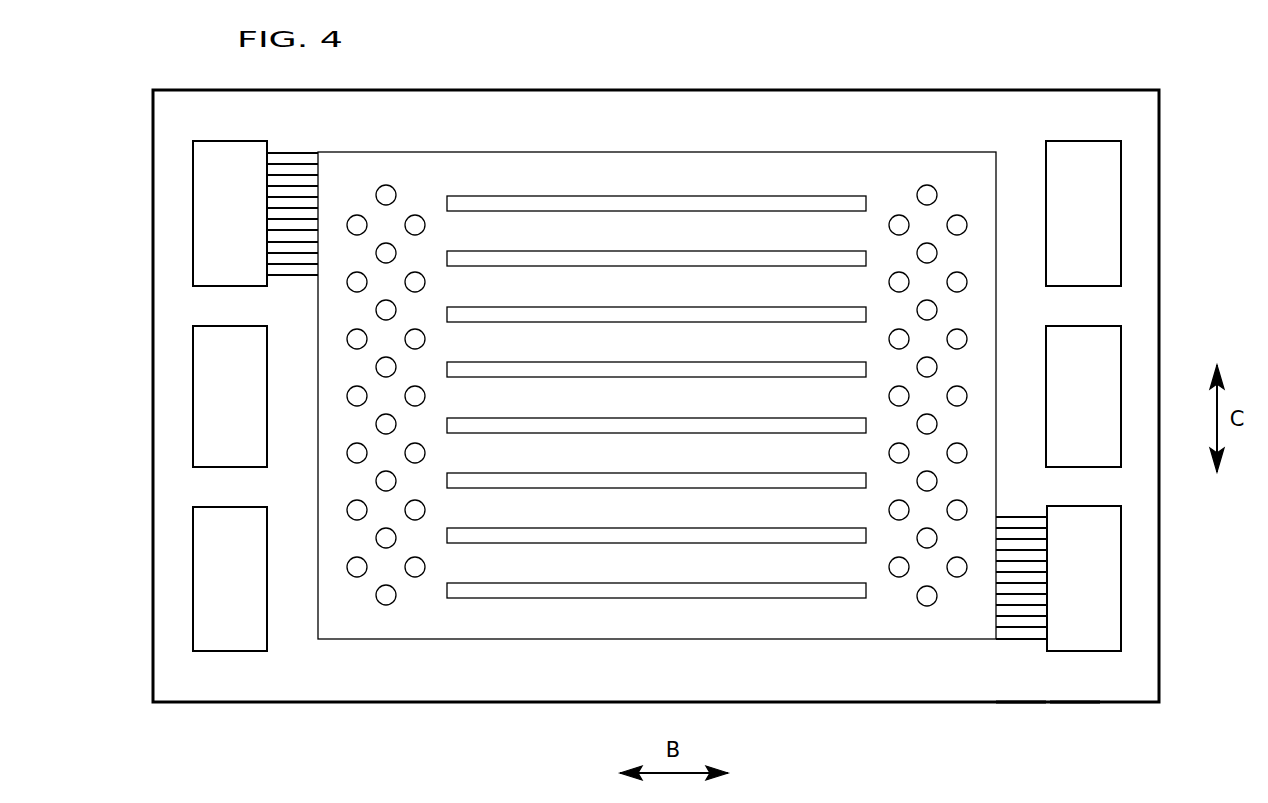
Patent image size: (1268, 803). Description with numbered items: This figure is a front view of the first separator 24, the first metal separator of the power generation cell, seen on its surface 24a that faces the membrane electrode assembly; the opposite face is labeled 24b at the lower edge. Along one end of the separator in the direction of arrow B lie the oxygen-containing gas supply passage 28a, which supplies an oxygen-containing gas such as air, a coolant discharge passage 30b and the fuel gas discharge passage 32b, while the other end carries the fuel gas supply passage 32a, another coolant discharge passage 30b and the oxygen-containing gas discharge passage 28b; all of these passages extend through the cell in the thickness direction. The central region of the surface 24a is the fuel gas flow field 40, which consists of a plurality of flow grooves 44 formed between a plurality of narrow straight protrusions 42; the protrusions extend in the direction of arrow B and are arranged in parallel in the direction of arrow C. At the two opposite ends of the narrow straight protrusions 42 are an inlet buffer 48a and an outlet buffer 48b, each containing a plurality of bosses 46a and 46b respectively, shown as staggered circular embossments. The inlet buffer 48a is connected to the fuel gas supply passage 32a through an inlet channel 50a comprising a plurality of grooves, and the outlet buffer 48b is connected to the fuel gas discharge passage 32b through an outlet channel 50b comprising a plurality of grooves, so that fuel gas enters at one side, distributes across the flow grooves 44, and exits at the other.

The first separator 24 is at (826, 69).
The surface 24a is at (1014, 688).
The second surface of substrate 24b is at (1072, 688).
The oxygen-containing gas supply passage 28a is at (1083, 213).
The oxygen-containing gas discharge passage 28b is at (230, 579).
The coolant discharge passage 30b is at (657, 396).
The fuel gas supply passage 32a is at (230, 213).
The fuel gas discharge passage 32b is at (1084, 578).
The fuel gas flow field 40 is at (793, 175).
The narrow straight protrusions 42 is at (495, 205).
The flow grooves 44 is at (667, 228).
The bosses 46a is at (386, 195).
The bosses 46b is at (927, 596).
The inlet buffer 48a is at (385, 566).
The outlet buffer 48b is at (928, 223).
The inlet channel 50a is at (267, 158).
The outlet channel 50b is at (1047, 612).